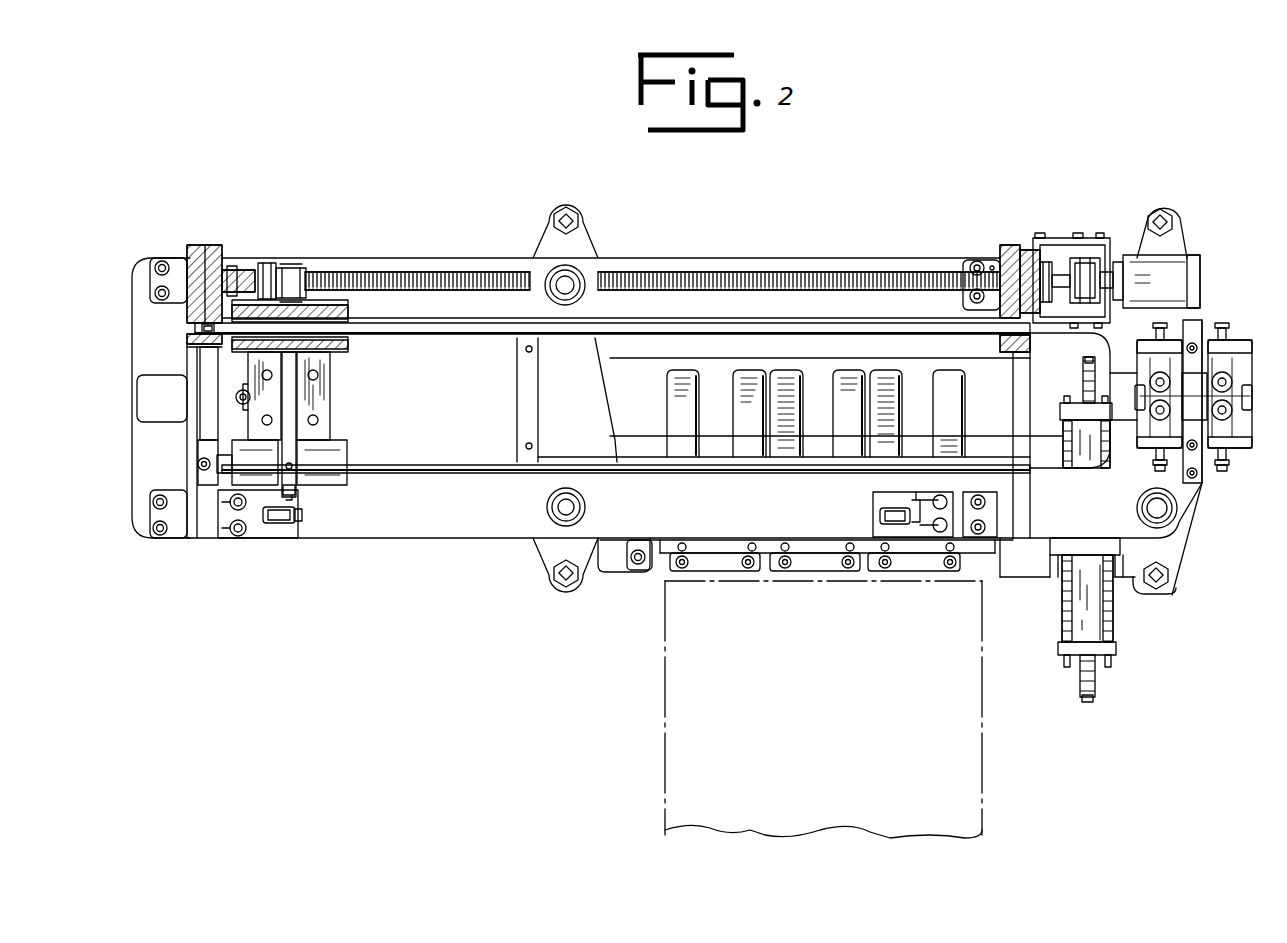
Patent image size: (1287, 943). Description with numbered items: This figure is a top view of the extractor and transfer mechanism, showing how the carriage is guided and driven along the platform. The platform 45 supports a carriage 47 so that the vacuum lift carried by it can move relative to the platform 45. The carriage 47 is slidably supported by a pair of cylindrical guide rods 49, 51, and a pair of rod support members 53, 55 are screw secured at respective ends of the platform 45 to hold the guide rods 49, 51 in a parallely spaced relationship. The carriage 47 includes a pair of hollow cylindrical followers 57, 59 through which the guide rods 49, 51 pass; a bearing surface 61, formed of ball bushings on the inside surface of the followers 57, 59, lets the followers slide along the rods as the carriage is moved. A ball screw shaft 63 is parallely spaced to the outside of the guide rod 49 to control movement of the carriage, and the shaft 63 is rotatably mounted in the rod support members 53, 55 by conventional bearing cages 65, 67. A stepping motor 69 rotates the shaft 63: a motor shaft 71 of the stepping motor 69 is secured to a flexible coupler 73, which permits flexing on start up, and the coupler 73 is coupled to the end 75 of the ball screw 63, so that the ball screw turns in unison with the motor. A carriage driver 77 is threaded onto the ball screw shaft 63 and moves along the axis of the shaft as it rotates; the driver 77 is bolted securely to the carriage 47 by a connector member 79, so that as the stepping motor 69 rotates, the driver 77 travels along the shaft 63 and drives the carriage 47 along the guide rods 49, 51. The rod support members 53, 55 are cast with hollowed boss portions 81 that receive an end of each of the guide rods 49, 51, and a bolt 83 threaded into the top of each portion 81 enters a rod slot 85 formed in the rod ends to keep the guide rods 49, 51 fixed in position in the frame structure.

The platform 45 is at (440, 520).
The carriage 47 is at (317, 402).
The guide rod 49 is at (478, 328).
The guide rod 51 is at (448, 467).
The rod support member 53 is at (198, 246).
The rod support member 55 is at (1000, 248).
The hollow cylindrical follower 57 is at (353, 343).
The hollow cylindrical follower 59 is at (348, 482).
The bearing surface 61 is at (340, 307).
The ball screw shaft 63 is at (702, 273).
The bearing cage 65 is at (240, 278).
The bearing cage 67 is at (1018, 245).
The stepping motor 69 is at (1193, 272).
The motor shaft 71 is at (1113, 278).
The flexible coupler 73 is at (1085, 262).
The end of ball screw 75 is at (1052, 260).
The carriage driver 77 is at (298, 277).
The connector member 79 is at (262, 263).
The hollowed boss portion 81 is at (197, 445).
The bolt 83 is at (203, 464).
The rod slot 85 is at (202, 327).